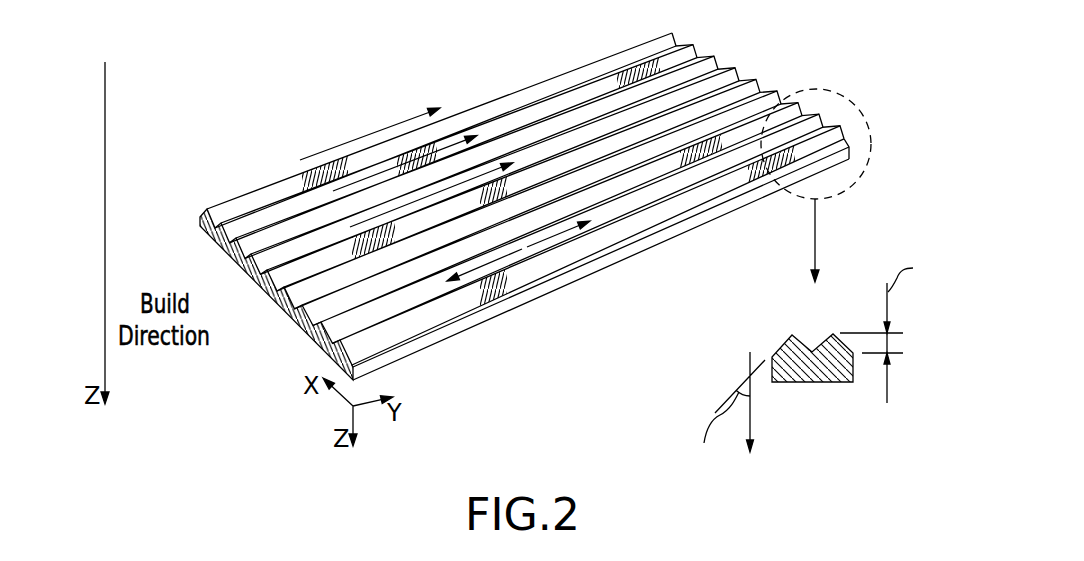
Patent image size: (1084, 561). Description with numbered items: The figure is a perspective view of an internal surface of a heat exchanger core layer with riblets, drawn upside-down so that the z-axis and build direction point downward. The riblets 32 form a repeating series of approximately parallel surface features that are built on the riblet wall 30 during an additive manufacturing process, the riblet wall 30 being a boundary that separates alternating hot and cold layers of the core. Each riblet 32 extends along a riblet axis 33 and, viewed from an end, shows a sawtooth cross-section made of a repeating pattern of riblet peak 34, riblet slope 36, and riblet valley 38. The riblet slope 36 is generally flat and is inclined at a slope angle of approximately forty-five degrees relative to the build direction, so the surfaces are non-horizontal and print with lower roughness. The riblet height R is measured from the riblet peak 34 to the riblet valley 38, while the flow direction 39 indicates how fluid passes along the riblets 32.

The riblet wall 30 is at (500, 208).
The riblet 32 is at (253, 152).
The riblet axis 33 is at (520, 252).
The riblet peak 34 is at (713, 137).
The riblet slope 36 is at (642, 196).
The riblet valley 38 is at (306, 334).
The flow direction 39 is at (400, 121).